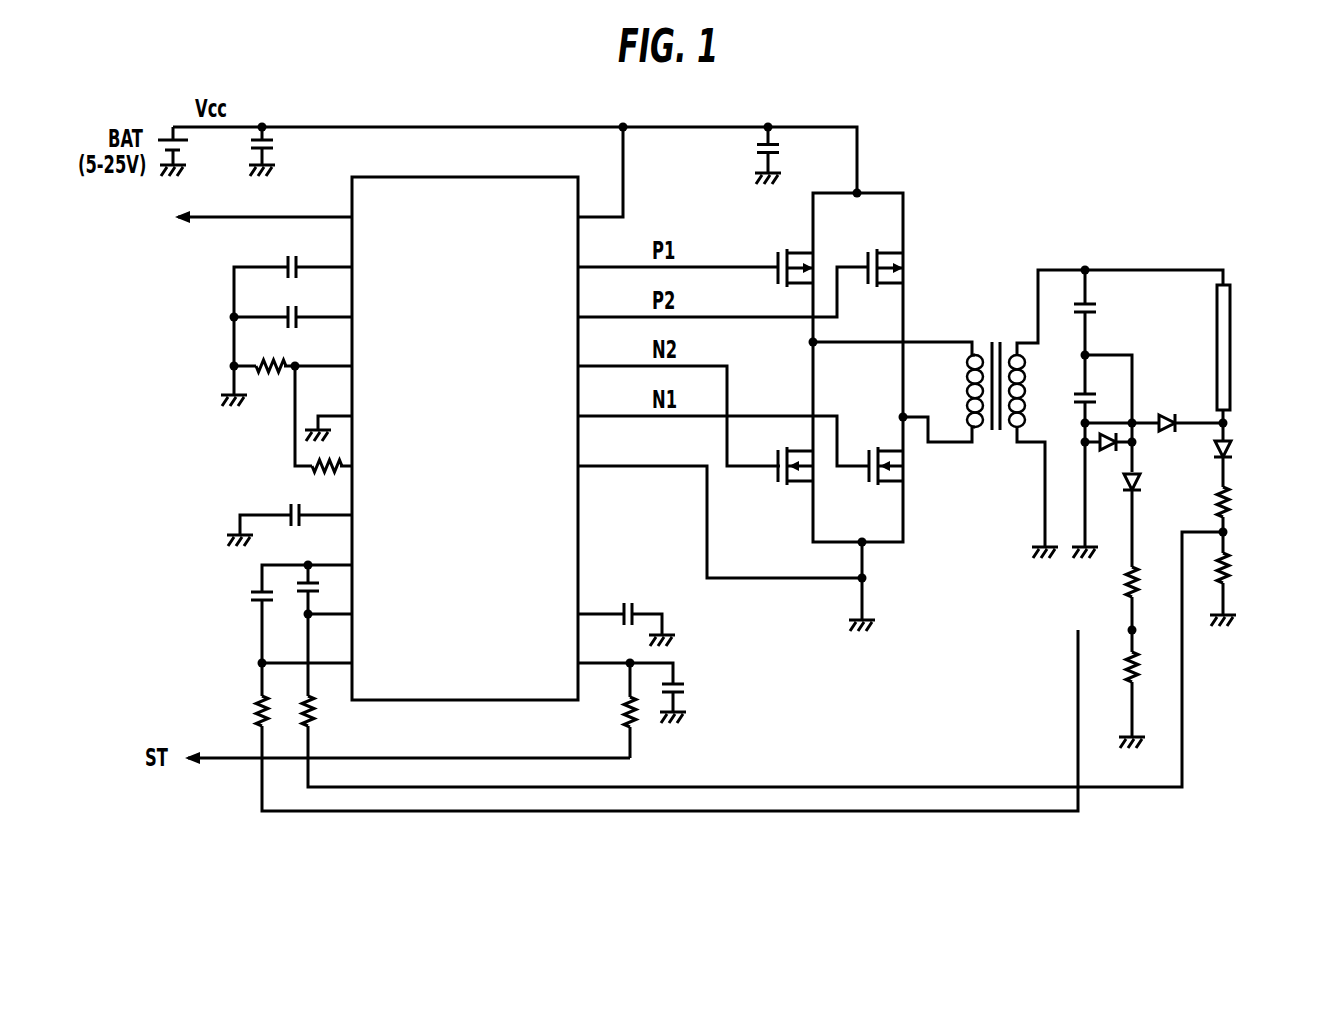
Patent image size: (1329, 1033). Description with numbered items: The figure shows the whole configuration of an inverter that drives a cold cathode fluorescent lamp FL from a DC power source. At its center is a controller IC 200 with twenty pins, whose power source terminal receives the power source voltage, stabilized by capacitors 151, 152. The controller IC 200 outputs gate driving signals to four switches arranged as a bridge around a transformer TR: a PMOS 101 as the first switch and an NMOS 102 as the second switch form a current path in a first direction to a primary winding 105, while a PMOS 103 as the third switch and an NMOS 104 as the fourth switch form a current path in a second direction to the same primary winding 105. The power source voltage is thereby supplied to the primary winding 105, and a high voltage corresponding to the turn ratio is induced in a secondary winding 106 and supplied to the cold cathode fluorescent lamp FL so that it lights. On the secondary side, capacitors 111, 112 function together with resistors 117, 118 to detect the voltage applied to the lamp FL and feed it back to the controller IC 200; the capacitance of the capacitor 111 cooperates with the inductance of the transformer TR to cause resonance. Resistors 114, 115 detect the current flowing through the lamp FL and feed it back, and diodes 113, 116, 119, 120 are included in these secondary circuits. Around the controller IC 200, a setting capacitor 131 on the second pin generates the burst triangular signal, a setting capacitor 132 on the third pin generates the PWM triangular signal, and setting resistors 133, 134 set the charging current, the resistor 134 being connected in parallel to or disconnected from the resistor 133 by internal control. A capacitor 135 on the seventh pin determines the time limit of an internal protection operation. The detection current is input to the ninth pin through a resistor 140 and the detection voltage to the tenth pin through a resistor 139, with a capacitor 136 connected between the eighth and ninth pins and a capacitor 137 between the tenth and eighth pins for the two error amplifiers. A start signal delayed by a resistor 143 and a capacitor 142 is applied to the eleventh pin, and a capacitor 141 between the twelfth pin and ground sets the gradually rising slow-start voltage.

The controller IC 200 is at (460, 177).
The PMOS 101 is at (800, 250).
The NMOS 102 is at (890, 488).
The PMOS 103 is at (890, 250).
The NMOS 104 is at (800, 488).
The primary winding 105 is at (968, 382).
The secondary winding 106 is at (1050, 386).
The capacitor 111 is at (1098, 308).
The capacitor 112 is at (1095, 400).
The diode 113 is at (1232, 445).
The resistor 114 is at (1232, 496).
The resistor 115 is at (1232, 566).
The diode 116 is at (1140, 478).
The resistor 117 is at (1125, 582).
The resistor 118 is at (1140, 670).
The diode 119 is at (1168, 415).
The diode 120 is at (1112, 456).
The setting capacitor 131 is at (292, 252).
The setting capacitor 132 is at (292, 304).
The setting resistor 133 is at (283, 360).
The setting resistor 134 is at (322, 475).
The capacitor 135 is at (290, 502).
The capacitor 136 is at (300, 594).
The capacitor 137 is at (246, 597).
The resistor 139 is at (256, 710).
The resistor 140 is at (316, 722).
The capacitor 141 is at (628, 600).
The capacitor 142 is at (688, 688).
The resistor 143 is at (624, 720).
The capacitor 151 is at (283, 143).
The capacitor 152 is at (760, 148).
The transformer TR is at (995, 371).
The cold cathode fluorescent lamp FL is at (1232, 343).